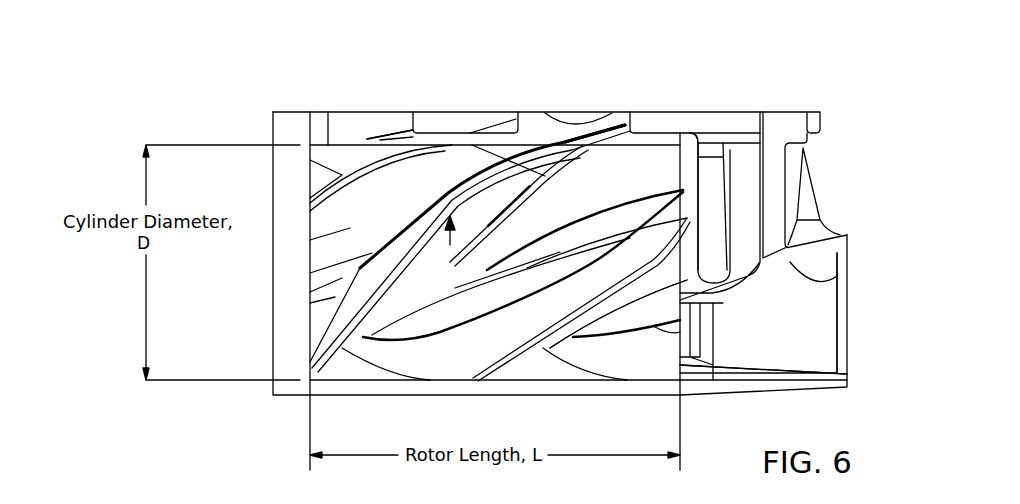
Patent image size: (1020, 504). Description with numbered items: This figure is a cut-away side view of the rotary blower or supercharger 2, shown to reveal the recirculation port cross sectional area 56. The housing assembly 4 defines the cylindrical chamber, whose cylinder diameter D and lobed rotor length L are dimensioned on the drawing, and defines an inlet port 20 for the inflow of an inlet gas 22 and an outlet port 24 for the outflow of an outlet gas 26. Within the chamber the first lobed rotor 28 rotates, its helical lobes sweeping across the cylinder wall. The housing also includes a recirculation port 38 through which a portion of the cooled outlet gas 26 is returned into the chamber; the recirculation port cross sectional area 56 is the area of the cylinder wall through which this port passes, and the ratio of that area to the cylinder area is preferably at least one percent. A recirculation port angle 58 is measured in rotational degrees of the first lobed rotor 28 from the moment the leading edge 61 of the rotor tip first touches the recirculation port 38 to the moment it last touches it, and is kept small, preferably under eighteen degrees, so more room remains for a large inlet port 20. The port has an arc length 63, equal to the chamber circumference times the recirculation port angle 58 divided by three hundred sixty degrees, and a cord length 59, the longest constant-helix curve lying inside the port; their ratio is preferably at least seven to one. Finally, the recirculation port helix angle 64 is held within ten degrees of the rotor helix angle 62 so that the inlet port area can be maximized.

The rotary blower or supercharger 2 is at (819, 88).
The housing assembly 4 is at (820, 200).
The inlet port 20 is at (810, 300).
The inlet gas 22 is at (797, 322).
The outlet port 24 is at (367, 138).
The outlet gas 26 is at (348, 128).
The first lobed rotor 28 is at (660, 165).
The recirculation port 38 is at (540, 140).
The recirculation port cross sectional area 56 is at (330, 308).
The recirculation port angle 58 is at (451, 192).
The arc length 63 is at (451, 182).
The cord length 59 is at (565, 142).
The leading edge 61 is at (586, 311).
The rotor helix angle 62 is at (453, 255).
The recirculation port helix angle 64 is at (430, 216).